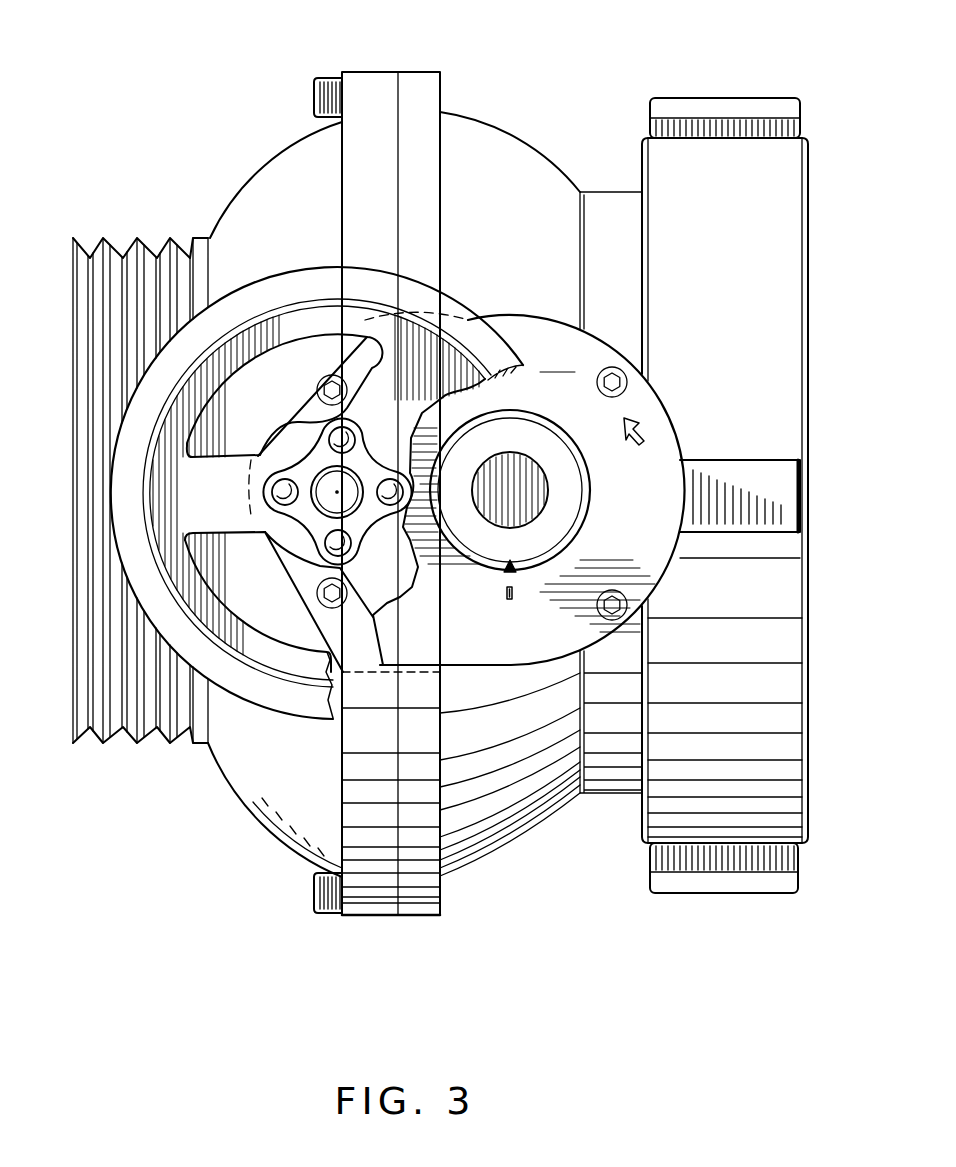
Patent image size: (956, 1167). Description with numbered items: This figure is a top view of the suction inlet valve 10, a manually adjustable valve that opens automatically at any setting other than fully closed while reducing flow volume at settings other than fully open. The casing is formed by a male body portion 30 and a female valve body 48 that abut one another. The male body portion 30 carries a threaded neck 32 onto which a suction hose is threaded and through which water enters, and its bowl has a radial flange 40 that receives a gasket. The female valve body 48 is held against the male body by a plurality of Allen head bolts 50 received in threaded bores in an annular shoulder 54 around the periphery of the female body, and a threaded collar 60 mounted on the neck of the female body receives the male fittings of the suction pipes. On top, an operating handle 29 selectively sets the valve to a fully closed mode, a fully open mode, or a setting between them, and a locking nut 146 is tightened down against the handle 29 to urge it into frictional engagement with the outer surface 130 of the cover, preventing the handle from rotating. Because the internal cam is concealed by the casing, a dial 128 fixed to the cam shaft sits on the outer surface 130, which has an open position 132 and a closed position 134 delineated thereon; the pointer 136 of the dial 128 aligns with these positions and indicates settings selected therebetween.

The valve 10 is at (270, 147).
The operating handle 29 is at (260, 287).
The male body portion 30 is at (285, 847).
The threaded neck 32 is at (132, 737).
The radial flange 40 is at (370, 80).
The female valve body 48 is at (522, 847).
The Allen head bolts 50 is at (327, 77).
The annular shoulder 54 is at (413, 917).
The threaded collar 60 is at (783, 178).
The dial 128 is at (517, 433).
The outer surface 130 is at (533, 332).
The open position 132 is at (574, 362).
The closed position 134 is at (512, 599).
The pointer 136 is at (497, 570).
The locking nut 146 is at (350, 460).